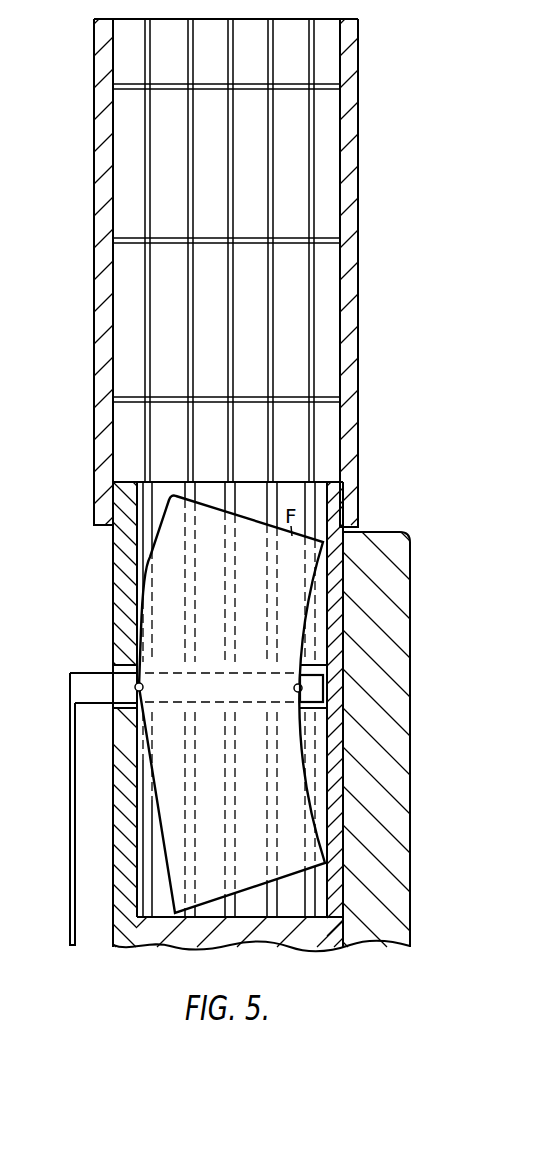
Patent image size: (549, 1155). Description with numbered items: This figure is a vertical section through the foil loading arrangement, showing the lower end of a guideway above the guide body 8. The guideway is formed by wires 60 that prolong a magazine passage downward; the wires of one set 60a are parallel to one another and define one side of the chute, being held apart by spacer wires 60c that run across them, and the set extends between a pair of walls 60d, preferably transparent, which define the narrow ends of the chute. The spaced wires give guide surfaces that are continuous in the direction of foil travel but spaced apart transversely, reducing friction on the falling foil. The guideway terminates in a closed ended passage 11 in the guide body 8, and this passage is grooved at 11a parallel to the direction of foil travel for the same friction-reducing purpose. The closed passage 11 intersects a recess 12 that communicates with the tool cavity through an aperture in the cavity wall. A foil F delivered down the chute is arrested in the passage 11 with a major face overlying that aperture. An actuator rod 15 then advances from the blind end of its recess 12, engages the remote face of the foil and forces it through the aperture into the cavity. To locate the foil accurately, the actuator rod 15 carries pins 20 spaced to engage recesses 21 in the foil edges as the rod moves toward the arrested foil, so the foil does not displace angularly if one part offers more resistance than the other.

The guide body 8 is at (335, 517).
The closed ended passage 11 is at (317, 890).
The grooves 11a is at (300, 497).
The recess 12 is at (322, 705).
The actuator rod 15 is at (75, 685).
The pins 20 is at (136, 689).
The recesses 21 is at (303, 672).
The wires 60 is at (236, 273).
The first set of wires 60a is at (310, 155).
The spacer wires 60c is at (290, 90).
The walls 60d is at (350, 333).